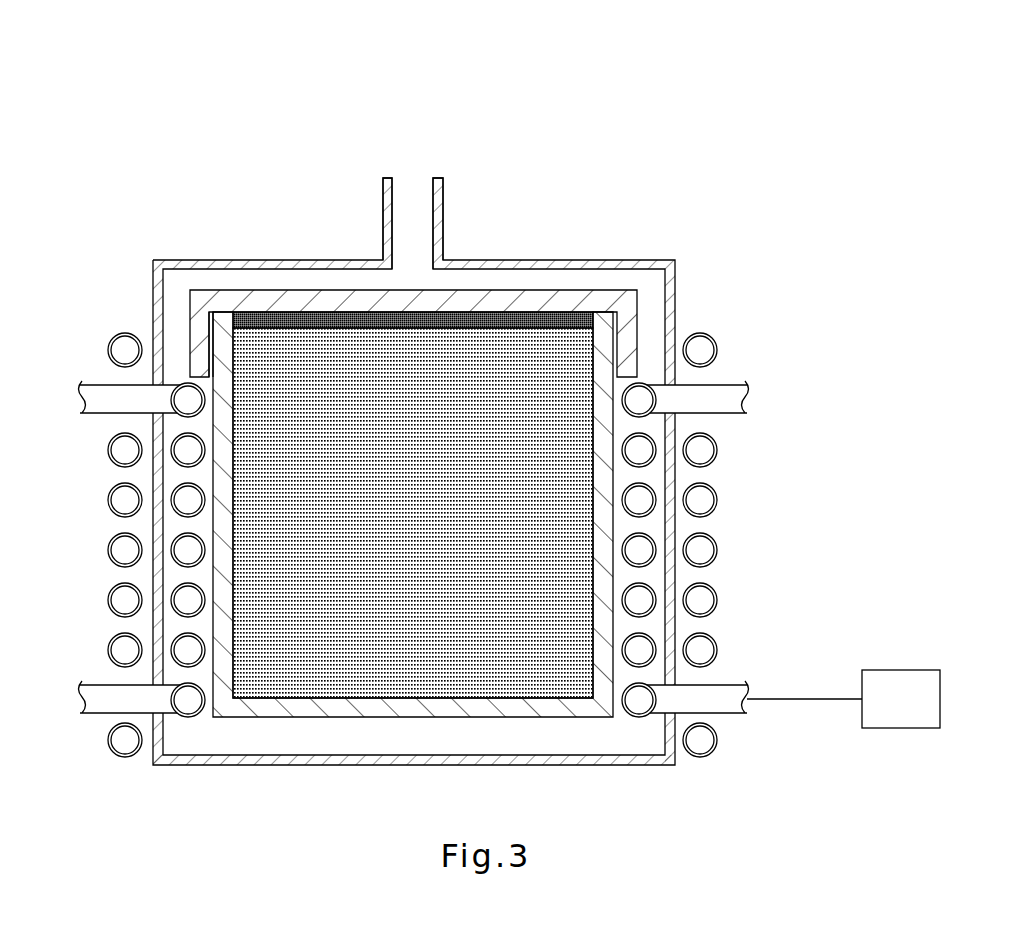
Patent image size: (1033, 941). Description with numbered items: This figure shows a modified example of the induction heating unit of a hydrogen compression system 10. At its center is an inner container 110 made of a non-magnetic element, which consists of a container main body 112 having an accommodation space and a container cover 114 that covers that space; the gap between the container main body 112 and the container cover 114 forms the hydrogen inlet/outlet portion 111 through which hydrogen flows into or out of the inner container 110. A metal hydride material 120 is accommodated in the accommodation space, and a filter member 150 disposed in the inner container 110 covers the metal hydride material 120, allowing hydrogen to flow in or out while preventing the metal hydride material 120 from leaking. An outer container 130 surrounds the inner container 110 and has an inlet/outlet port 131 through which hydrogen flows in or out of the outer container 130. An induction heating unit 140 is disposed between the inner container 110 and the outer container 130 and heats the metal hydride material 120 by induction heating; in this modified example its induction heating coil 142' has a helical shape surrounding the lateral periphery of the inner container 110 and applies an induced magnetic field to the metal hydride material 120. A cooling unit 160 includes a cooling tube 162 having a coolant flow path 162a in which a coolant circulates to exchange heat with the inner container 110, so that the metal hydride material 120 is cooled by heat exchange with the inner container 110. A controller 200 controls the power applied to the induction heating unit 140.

The hydrogen compression system 10 is at (104, 56).
The inner container 110 is at (225, 191).
The hydrogen inlet/outlet portion 111 is at (213, 361).
The container main body 112 is at (223, 326).
The container cover 114 is at (303, 304).
The metal hydride material 120 is at (576, 627).
The outer container 130 is at (614, 262).
The inlet/outlet port 131 is at (444, 215).
The induction heating unit 140 is at (640, 724).
The induction heating coil 142' is at (118, 645).
The filter member 150 is at (558, 322).
The cooling unit 160 is at (426, 568).
The cooling tube 162 is at (702, 551).
The coolant flow path 162a is at (718, 560).
The controller 200 is at (898, 670).